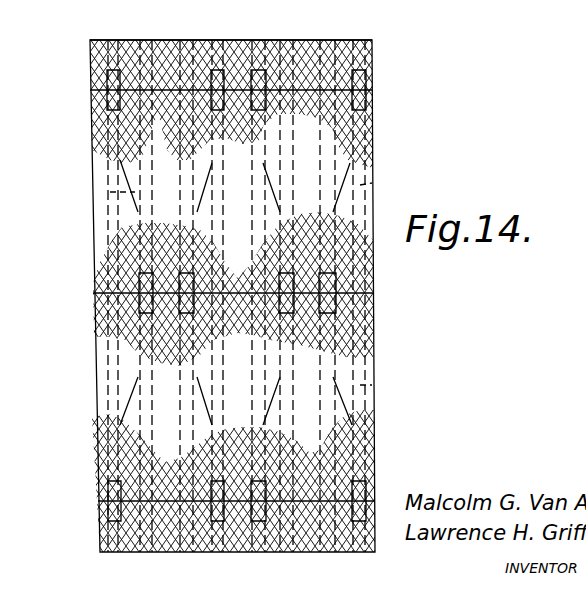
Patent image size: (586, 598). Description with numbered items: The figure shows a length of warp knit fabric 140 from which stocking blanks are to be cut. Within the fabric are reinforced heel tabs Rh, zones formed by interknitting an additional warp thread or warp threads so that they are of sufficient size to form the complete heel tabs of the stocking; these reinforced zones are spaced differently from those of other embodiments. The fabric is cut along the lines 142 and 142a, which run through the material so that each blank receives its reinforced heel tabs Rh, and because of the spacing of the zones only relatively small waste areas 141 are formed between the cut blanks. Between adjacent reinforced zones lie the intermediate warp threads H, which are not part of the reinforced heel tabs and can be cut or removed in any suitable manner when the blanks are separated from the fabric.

The panel assembly 140 is at (265, 45).
The waste areas 141 is at (143, 296).
The cutting line 142 is at (92, 103).
The cutting line 142a is at (68, 237).
The reinforced heel tabs Rh is at (363, 33).
The intermediate warp threads H is at (110, 192).